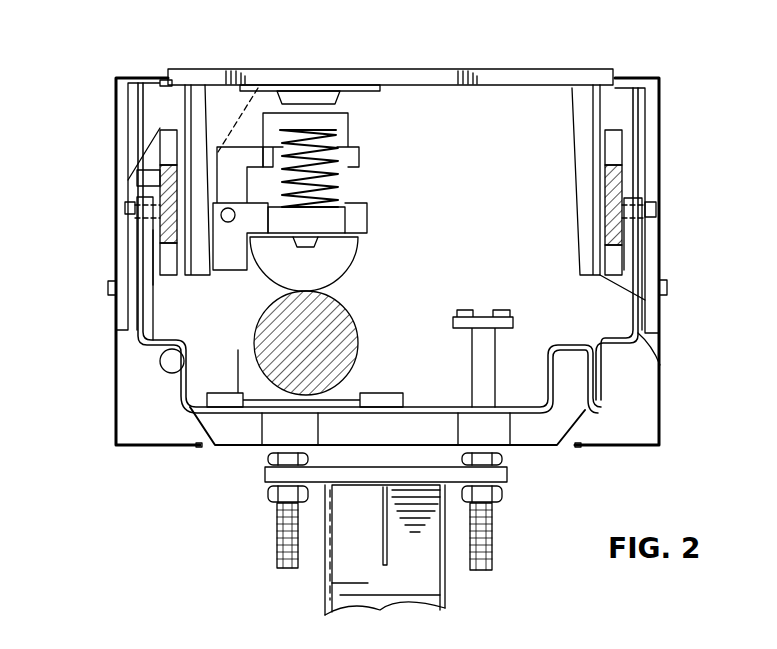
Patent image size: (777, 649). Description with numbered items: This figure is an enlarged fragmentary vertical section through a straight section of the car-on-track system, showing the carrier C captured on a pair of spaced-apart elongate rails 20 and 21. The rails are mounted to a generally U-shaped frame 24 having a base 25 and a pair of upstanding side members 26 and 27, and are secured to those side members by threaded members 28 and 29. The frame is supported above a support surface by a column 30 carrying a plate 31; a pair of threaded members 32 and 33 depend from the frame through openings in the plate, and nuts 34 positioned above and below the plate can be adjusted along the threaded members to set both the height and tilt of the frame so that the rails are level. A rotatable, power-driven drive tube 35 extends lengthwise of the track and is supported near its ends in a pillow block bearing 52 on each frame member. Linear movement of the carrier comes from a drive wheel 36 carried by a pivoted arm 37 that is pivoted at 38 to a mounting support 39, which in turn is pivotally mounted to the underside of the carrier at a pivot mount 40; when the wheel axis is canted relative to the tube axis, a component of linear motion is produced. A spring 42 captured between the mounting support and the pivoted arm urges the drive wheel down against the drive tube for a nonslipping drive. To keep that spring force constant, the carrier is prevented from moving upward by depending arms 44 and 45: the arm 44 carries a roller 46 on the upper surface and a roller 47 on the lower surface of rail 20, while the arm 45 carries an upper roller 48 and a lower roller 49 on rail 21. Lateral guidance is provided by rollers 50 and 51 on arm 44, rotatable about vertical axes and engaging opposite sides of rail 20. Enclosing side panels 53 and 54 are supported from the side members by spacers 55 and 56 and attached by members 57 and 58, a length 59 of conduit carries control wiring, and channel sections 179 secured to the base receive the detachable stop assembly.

The rail 20 is at (128, 190).
The rail 21 is at (618, 182).
The frame 24 is at (208, 463).
The base 25 is at (263, 440).
The side member 26 is at (148, 340).
The side member 27 is at (640, 357).
The threaded member 28 is at (125, 208).
The threaded member 29 is at (658, 208).
The column 30 is at (428, 578).
The plate 31 is at (500, 475).
The threaded member 32 is at (277, 530).
The threaded member 33 is at (493, 555).
The nuts 34 is at (503, 458).
The drive tube 35 is at (342, 302).
The drive wheel 36 is at (352, 252).
The pivoted arm 37 is at (360, 218).
The pivot 38 is at (236, 208).
The mounting support 39 is at (356, 135).
The pivot mount 40 is at (303, 102).
The spring 42 is at (340, 88).
The depending arm 44 is at (198, 102).
The depending arm 45 is at (660, 93).
The roller 46 is at (158, 136).
The roller 47 is at (167, 258).
The upper roller 48 is at (615, 149).
The pole piece 49 is at (612, 262).
The roller 50 is at (137, 178).
The roller 51 is at (260, 83).
The pillow block bearing 52 is at (368, 358).
The side panel 53 is at (118, 316).
The side panel 54 is at (660, 406).
The spacer 55 is at (140, 260).
The spacer 56 is at (650, 318).
The member 57 is at (108, 289).
The member 58 is at (668, 291).
The length of conduit 59 is at (160, 361).
The channel section 179 is at (505, 313).
The carrier C is at (482, 66).